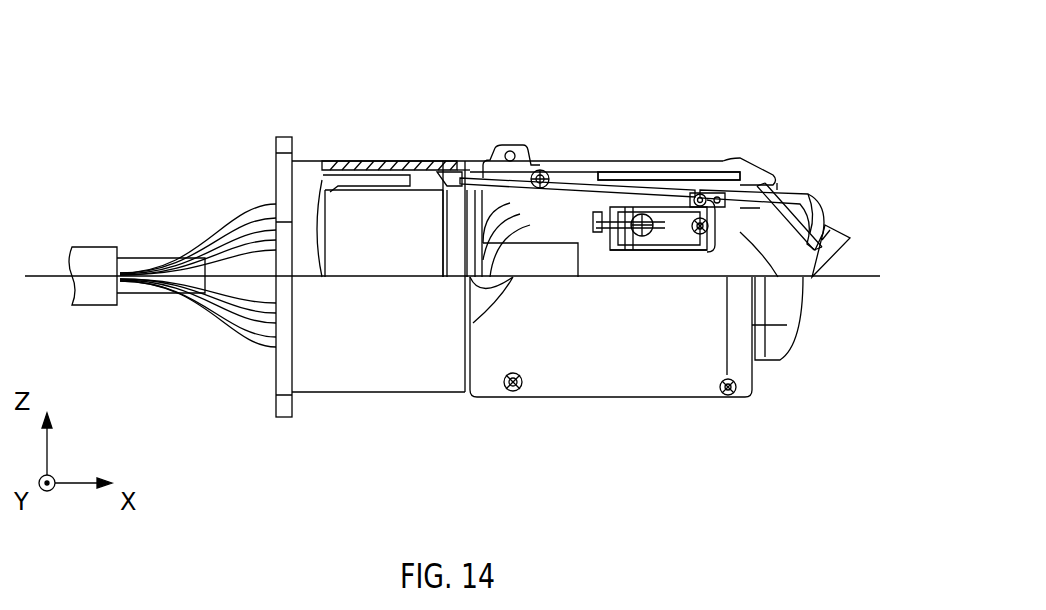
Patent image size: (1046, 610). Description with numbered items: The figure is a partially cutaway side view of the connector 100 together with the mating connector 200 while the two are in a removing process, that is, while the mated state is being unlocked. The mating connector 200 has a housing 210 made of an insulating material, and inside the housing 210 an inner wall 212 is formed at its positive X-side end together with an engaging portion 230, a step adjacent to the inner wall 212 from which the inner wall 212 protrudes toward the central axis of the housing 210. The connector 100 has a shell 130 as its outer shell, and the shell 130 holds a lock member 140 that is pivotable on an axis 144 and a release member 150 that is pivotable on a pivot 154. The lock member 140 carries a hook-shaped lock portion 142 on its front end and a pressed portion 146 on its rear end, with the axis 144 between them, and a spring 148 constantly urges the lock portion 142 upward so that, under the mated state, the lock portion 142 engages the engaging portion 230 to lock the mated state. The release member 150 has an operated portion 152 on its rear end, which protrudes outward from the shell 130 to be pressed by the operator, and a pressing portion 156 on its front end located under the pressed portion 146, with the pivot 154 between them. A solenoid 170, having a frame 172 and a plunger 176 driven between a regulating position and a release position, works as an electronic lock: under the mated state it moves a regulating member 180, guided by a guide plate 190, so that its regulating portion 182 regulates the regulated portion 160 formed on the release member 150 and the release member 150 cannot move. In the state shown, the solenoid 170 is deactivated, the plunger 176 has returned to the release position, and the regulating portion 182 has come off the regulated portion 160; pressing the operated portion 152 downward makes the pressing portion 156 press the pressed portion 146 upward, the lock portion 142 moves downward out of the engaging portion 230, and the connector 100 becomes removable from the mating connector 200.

The connector 100 is at (566, 264).
The mating connector 200 is at (226, 146).
The shell 130 is at (361, 183).
The lock member 140 is at (417, 188).
The lock portion 142 is at (425, 111).
The axis 144 is at (543, 172).
The pressed portion 146 is at (606, 186).
The spring 148 is at (522, 150).
The release member 150 is at (778, 194).
The operated portion 152 is at (818, 170).
The pivot 154 is at (700, 185).
The pressing portion 156 is at (610, 193).
The regulated portion 160 is at (580, 210).
The solenoid 170 is at (714, 342).
The frame 172 is at (725, 344).
The plunger 176 is at (645, 232).
The regulating member 180 is at (633, 356).
The regulating portion 182 is at (612, 235).
The guide plate 190 is at (633, 240).
The housing 210 is at (334, 160).
The inner wall 212 is at (433, 175).
The engaging portion 230 is at (438, 186).